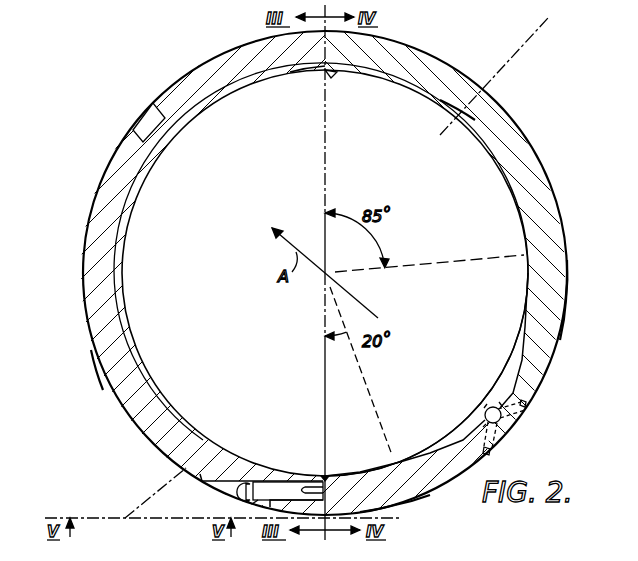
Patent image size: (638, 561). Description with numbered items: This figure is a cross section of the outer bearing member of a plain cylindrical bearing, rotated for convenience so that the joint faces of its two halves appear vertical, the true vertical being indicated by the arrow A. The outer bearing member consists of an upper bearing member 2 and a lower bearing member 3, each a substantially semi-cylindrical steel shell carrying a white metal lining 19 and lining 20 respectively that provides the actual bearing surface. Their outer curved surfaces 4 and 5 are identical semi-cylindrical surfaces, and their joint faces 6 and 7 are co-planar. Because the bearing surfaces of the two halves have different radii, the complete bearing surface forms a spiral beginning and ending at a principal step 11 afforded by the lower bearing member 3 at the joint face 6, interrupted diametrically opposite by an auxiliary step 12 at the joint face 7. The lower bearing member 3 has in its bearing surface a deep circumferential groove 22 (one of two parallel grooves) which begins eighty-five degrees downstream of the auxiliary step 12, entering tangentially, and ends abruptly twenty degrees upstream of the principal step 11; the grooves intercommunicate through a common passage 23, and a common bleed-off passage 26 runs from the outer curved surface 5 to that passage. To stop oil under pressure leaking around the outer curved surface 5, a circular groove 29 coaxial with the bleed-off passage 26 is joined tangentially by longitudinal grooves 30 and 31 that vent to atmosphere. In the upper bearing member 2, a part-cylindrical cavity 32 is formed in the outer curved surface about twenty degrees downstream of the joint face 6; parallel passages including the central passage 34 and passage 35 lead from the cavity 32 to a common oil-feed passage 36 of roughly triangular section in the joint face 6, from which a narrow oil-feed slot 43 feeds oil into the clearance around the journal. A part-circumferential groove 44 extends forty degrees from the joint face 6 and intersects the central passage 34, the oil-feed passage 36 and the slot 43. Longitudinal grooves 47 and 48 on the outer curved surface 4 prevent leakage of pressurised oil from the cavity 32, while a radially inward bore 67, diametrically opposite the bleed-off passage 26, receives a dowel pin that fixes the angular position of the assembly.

The upper bearing member 2 is at (98, 287).
The lower bearing member 3 is at (558, 243).
The outer curved surface 4 is at (112, 382).
The outer curved surface 5 is at (563, 322).
The joint face 6 is at (380, 505).
The joint face 7 is at (322, 66).
The principal step 11 is at (390, 470).
The auxiliary step 12 is at (338, 72).
The lining 19 is at (163, 153).
The lining 20 is at (475, 133).
The circumferentially extending groove 22 is at (505, 372).
The common passage 23 is at (485, 411).
The common bleed-off passage 26 is at (540, 380).
The circular groove 29 is at (513, 427).
The groove 30 is at (527, 403).
The groove 31 is at (490, 450).
The part-cylindrical cavity 32 is at (224, 487).
The central passage 34 is at (264, 480).
The passage 35 is at (243, 498).
The common oil-feed passage 36 is at (415, 495).
The oil-feed slot 43 is at (324, 478).
The part-circumferential groove 44 is at (278, 481).
The longitudinal groove 47 is at (183, 470).
The longitudinal groove 48 is at (300, 486).
The radially inward extending bore 67 is at (143, 125).